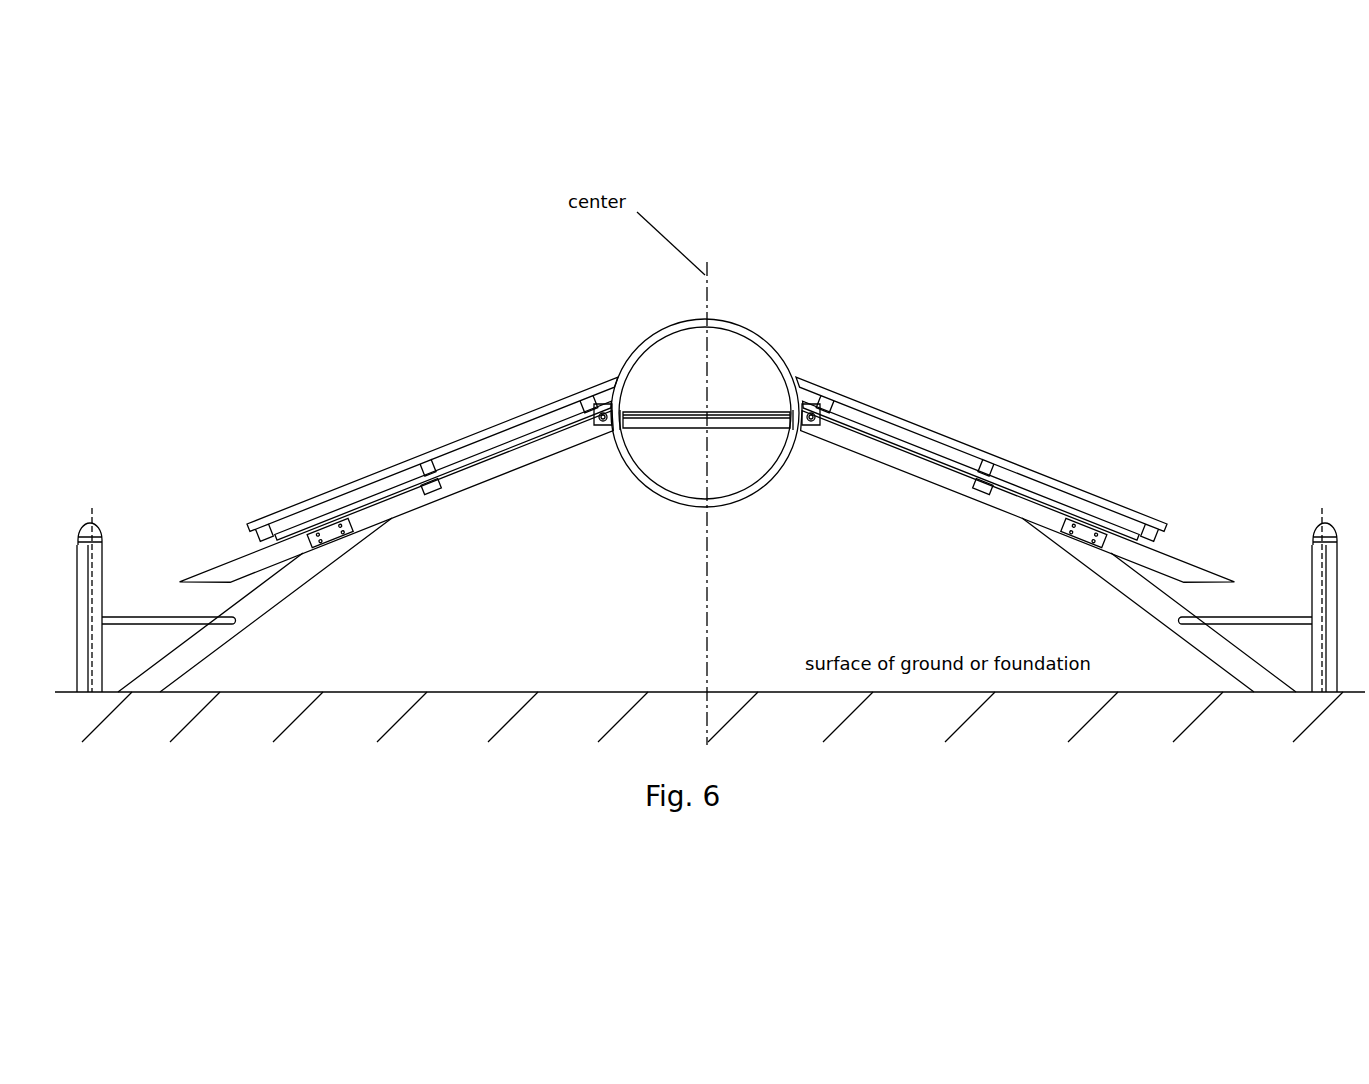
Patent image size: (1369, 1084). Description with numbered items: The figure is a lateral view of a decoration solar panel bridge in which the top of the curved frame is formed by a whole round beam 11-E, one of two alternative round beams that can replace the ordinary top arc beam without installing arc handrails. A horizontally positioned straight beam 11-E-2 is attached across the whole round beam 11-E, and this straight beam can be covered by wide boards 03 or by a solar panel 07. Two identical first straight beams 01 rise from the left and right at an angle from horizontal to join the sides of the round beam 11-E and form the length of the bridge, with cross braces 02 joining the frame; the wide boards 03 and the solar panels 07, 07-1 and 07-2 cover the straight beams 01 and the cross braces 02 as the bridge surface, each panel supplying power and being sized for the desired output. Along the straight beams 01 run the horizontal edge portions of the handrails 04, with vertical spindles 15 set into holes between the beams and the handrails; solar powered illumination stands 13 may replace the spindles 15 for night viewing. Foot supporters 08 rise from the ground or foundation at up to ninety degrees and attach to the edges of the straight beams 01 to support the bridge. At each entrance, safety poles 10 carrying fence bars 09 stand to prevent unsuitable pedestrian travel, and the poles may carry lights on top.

The first straight beam 01 is at (240, 575).
The cross brace 02 is at (375, 555).
The wide board 03 is at (388, 455).
The edge portion of handrail 04 is at (437, 445).
The solar panel 07 is at (745, 407).
The solar panel 07-1 is at (950, 462).
The solar panel 07-2 is at (988, 490).
The foot supporter 08 is at (1150, 605).
The fence bar 09 is at (1255, 617).
The safety pole 10 is at (1310, 580).
The whole round beam 11-E is at (651, 335).
The straight beam 11-E-2 is at (765, 430).
The solar powered illumination stand 13 is at (707, 417).
The vertical spindle of handrail 15 is at (597, 405).